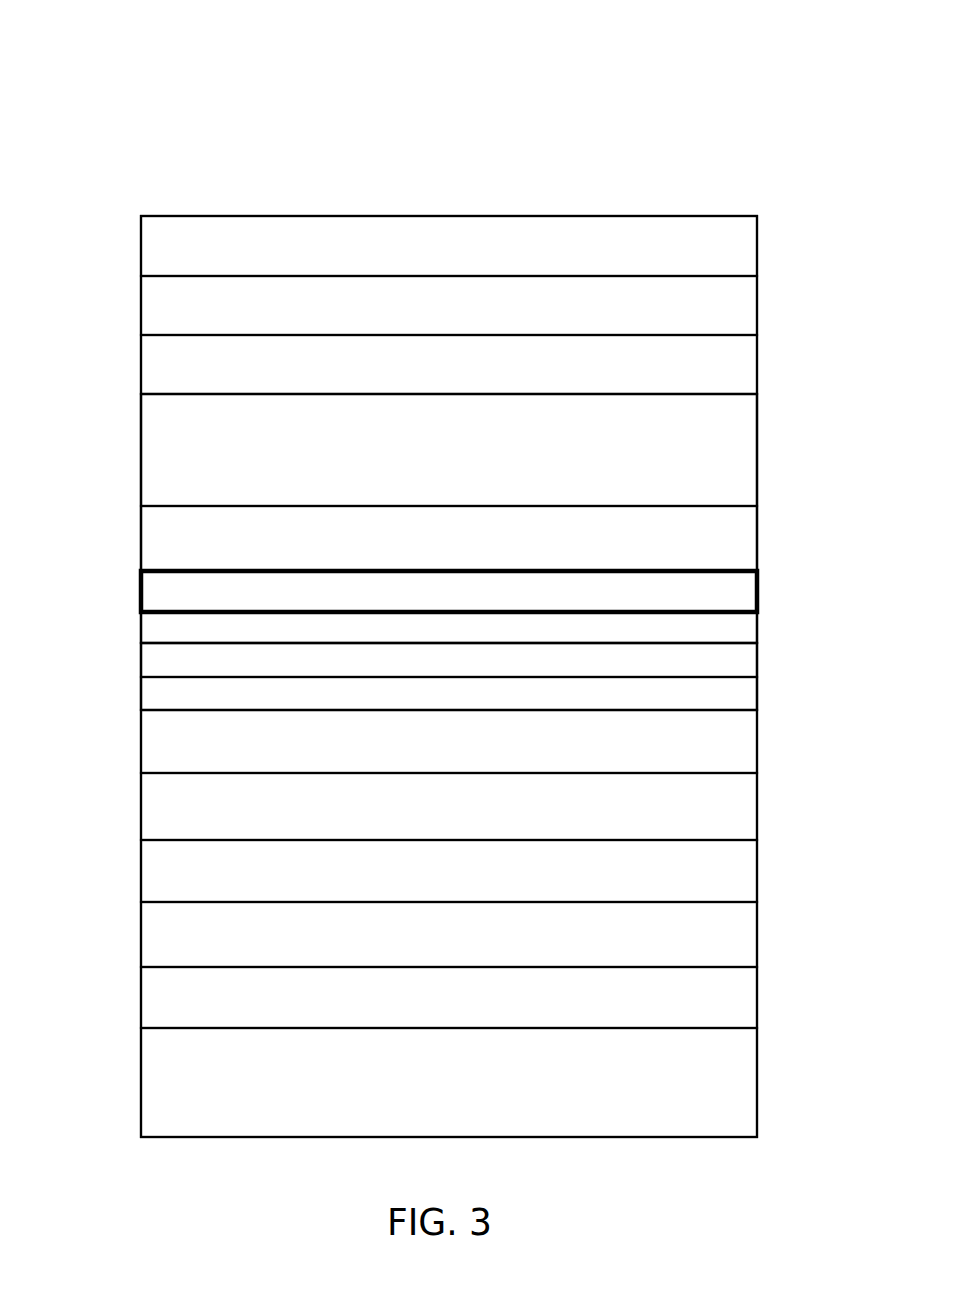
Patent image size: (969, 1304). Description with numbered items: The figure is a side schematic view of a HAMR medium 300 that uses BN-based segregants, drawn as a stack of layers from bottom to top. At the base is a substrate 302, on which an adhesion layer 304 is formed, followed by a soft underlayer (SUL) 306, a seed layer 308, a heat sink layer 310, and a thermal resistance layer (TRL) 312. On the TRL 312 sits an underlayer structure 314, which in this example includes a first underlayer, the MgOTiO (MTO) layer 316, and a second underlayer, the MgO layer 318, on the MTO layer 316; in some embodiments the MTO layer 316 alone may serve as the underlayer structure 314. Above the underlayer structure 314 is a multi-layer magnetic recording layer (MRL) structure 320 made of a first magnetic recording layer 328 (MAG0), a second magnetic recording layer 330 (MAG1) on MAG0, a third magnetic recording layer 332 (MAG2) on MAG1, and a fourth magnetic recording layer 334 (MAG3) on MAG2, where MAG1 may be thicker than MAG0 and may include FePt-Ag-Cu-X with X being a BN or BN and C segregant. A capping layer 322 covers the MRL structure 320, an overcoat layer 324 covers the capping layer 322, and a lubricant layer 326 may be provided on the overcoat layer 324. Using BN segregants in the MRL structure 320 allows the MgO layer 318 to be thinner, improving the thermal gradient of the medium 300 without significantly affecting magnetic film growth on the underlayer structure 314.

The HAMR medium 300 is at (168, 102).
The substrate 302 is at (141, 1083).
The adhesion layer 304 is at (141, 997).
The soft underlayer (SUL) 306 is at (141, 935).
The seed layer 308 is at (141, 866).
The heat sink layer 310 is at (141, 807).
The thermal resistance layer (TRL) 312 is at (141, 744).
The underlayer structure 314 is at (773, 643).
The MgOTiO (MTO) layer 316 is at (141, 695).
The MgO layer 318 is at (141, 660).
The multi-layer magnetic recording layer (MRL) structure 320 is at (773, 393).
The first magnetic recording layer 328 is at (141, 623).
The second magnetic recording layer 330 is at (141, 588).
The third magnetic recording layer 332 is at (141, 536).
The fourth magnetic recording layer 334 is at (141, 447).
The capping layer 322 is at (141, 366).
The overcoat layer 324 is at (141, 307).
The lubricant layer 326 is at (141, 248).